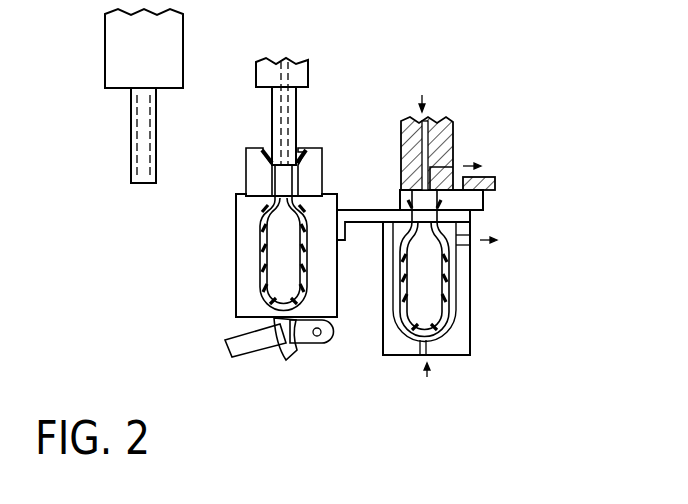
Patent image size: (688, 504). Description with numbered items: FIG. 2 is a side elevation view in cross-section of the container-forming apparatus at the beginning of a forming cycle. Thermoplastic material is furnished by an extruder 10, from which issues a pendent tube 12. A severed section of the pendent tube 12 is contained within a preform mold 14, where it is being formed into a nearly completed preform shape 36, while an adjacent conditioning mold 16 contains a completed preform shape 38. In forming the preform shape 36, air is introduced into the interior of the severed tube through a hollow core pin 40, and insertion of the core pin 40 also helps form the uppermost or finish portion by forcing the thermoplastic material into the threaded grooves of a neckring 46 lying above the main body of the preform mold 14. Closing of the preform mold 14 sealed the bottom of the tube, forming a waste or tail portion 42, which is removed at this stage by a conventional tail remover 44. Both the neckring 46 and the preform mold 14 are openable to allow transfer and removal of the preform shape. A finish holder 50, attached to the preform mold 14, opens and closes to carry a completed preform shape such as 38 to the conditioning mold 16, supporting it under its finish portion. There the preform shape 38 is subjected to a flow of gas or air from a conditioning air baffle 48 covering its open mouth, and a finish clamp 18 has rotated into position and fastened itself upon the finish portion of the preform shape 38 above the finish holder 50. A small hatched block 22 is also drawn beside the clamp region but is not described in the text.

The extruder 10 is at (182, 33).
The pendent tube 12 is at (133, 142).
The preform mold 14 is at (336, 285).
The conditioning mold 16 is at (470, 300).
The finish clamp 18 is at (485, 207).
The neck insert block 22 is at (495, 176).
The preform shape 36 is at (257, 255).
The completed preform shape 38 is at (445, 312).
The hollow core pin 40 is at (298, 113).
The tail portion 42 is at (285, 345).
The tail remover 44 is at (240, 354).
The neckring 46 is at (322, 147).
The conditioning air baffle 48 is at (455, 127).
The finish holder 50 is at (360, 209).